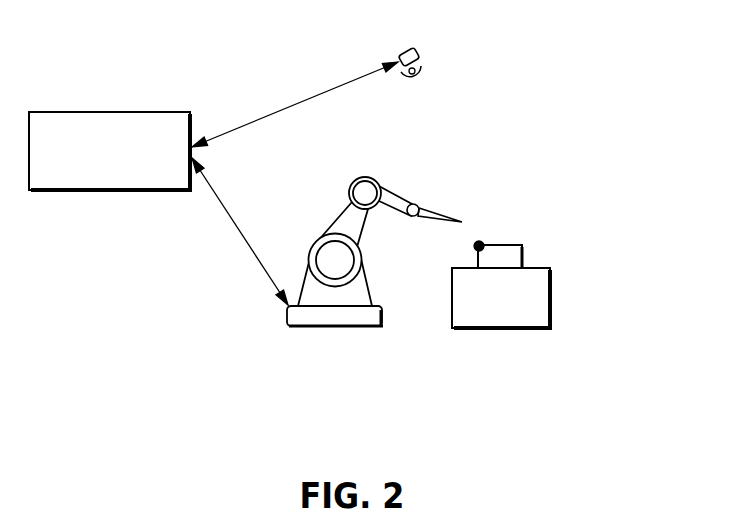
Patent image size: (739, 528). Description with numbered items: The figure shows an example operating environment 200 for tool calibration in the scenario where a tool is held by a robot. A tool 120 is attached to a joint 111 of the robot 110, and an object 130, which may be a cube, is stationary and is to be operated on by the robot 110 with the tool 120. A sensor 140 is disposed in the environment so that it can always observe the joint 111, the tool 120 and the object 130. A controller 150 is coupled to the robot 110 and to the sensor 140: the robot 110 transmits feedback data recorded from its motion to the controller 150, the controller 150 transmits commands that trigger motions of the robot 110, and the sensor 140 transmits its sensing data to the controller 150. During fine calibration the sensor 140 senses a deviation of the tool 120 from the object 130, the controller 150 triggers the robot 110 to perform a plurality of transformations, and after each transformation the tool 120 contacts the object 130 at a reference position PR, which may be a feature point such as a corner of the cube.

The robot 110 is at (347, 183).
The joint 111 is at (406, 213).
The tool 120 is at (436, 217).
The object 130 is at (523, 253).
The sensor 140 is at (421, 53).
The controller 150 is at (62, 109).
The operating environment 200 is at (282, 58).
The reference position PR is at (475, 249).